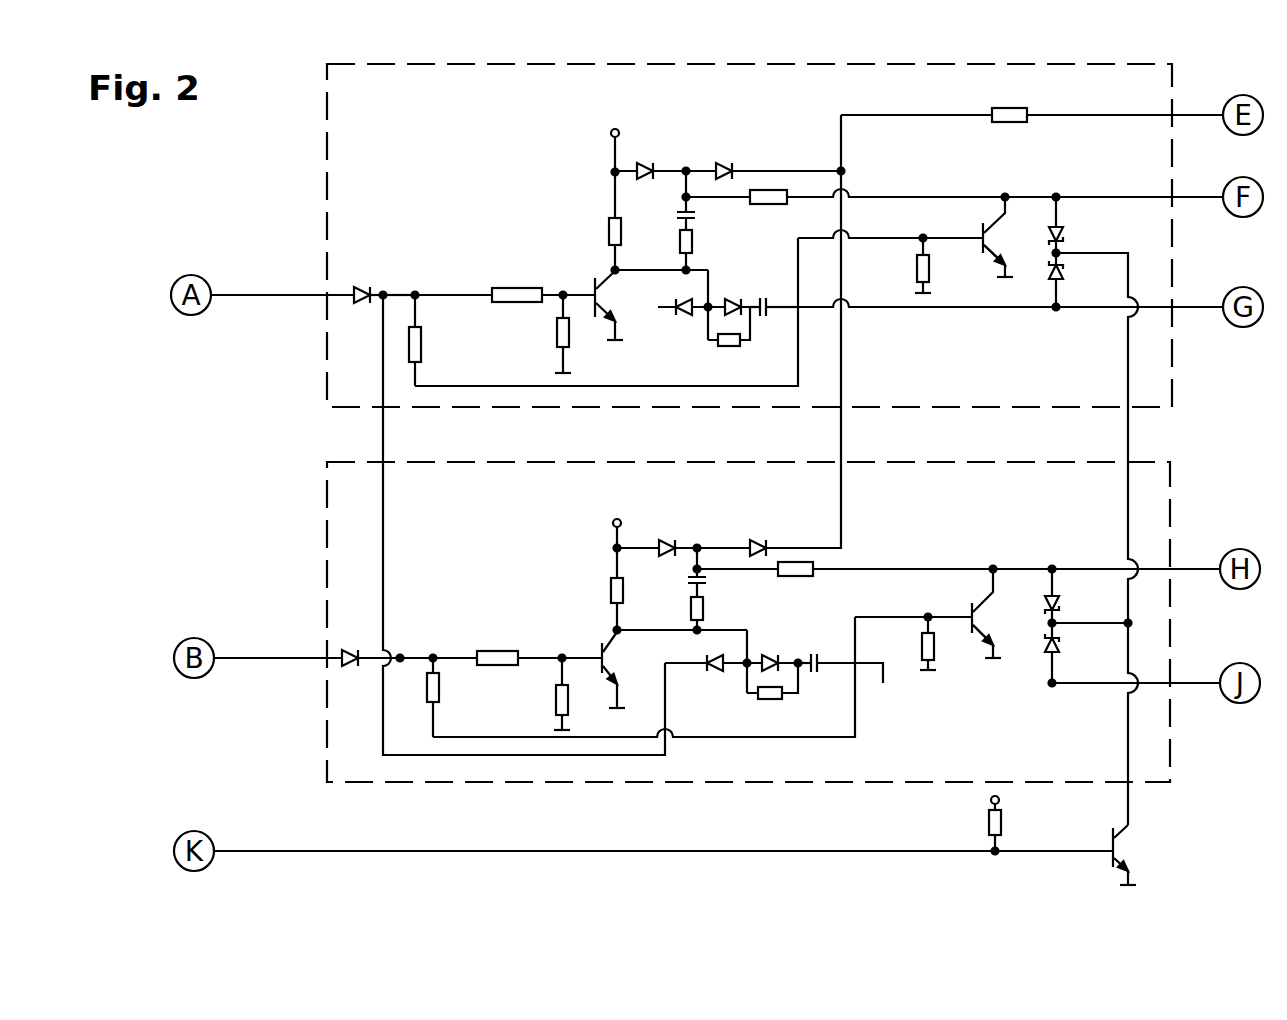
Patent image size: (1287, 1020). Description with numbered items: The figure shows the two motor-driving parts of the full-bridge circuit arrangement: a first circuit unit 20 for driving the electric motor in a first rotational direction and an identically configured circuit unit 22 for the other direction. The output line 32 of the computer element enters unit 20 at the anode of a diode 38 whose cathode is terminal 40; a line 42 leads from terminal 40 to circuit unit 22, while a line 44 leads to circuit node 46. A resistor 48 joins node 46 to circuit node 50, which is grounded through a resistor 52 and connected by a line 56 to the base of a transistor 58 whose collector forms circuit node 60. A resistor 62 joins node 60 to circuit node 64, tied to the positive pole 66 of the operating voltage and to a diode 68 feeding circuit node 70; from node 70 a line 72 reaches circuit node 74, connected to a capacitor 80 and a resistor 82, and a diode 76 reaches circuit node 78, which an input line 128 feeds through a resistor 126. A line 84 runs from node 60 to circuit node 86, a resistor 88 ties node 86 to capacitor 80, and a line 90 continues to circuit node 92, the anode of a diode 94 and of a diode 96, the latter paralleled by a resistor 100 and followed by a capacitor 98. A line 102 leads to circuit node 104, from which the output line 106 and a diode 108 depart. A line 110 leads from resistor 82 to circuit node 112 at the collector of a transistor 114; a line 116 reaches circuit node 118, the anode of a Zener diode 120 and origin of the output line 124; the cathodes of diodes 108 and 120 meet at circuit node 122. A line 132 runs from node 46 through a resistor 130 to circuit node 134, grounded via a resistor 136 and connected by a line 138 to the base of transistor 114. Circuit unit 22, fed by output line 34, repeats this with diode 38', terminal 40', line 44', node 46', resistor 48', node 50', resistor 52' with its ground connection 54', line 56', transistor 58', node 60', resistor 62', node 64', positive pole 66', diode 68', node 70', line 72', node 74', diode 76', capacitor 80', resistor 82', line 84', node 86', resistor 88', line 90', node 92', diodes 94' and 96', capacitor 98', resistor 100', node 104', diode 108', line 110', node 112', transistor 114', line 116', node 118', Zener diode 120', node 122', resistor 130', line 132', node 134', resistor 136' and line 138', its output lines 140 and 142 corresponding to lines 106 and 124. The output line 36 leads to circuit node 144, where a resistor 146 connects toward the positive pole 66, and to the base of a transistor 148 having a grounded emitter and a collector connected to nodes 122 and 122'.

The first circuit unit 20 is at (1172, 77).
The circuit unit 22 is at (1170, 473).
The output line 32 is at (248, 293).
The output line 34 is at (260, 655).
The output line 36 is at (288, 848).
The diode 38 is at (365, 265).
The terminal 40 is at (367, 325).
The line 42 is at (385, 432).
The line 44 is at (402, 265).
The circuit node 46 is at (438, 261).
The resistor 48 is at (453, 238).
The circuit node 50 is at (526, 265).
The resistor 52 is at (582, 339).
The ground connection 54' is at (538, 718).
The line 56 is at (568, 270).
The transistor 58 is at (621, 305).
The circuit node 60 is at (593, 237).
The resistor 62 is at (589, 203).
The circuit node 64 is at (588, 147).
The positive pole of the operating voltage 66 is at (788, 453).
The diode 68 is at (650, 143).
The circuit node 70 is at (697, 141).
The first line 72 is at (676, 134).
The circuit node 74 is at (663, 201).
The diode 76 is at (763, 144).
The circuit node 78 is at (842, 170).
The capacitor 80 is at (722, 221).
The resistor 82 is at (756, 217).
The line 84 is at (661, 251).
The circuit node 86 is at (675, 286).
The resistor 88 is at (702, 248).
The line 90 is at (743, 290).
The circuit node 92 is at (729, 288).
The diode 94 is at (683, 337).
The diode 96 is at (792, 287).
The capacitor 98 is at (782, 332).
The resistor 100 is at (739, 347).
The line 102 is at (890, 310).
The circuit node 104 is at (1083, 331).
The output line 106 is at (1205, 313).
The diode 108 is at (1037, 305).
The line 110 is at (896, 170).
The circuit node 112 is at (983, 172).
The transistor 114 is at (981, 273).
The line 116 is at (1031, 170).
The circuit node 118 is at (1089, 172).
The Zener diode 120 is at (1084, 223).
The circuit node 122 is at (1109, 520).
The output line 124 is at (1200, 203).
The resistor 126 is at (1028, 110).
The input line 128 is at (930, 115).
The resistor 130 is at (443, 340).
The line 132 is at (606, 312).
The circuit node 134 is at (899, 221).
The resistor 136 is at (894, 266).
The line 138 is at (974, 237).
The output line 140 is at (1195, 688).
The output line 142 is at (1200, 575).
The circuit node 144 is at (993, 853).
The resistor 146 is at (1003, 818).
The transistor 148 is at (1130, 842).
The diode 38' is at (368, 628).
The terminal 40' is at (420, 630).
The line 44' is at (412, 686).
The circuit node 46' is at (432, 605).
The resistor 48' is at (463, 596).
The circuit node 50' is at (518, 618).
The resistor 52' is at (582, 698).
The line 56' is at (554, 598).
The transistor 58' is at (630, 670).
The circuit node 60' is at (573, 610).
The resistor 62' is at (596, 578).
The circuit node 64' is at (581, 530).
The positive pole of the operating voltage 66' is at (604, 506).
The diode 68' is at (657, 521).
The circuit node 70' is at (715, 506).
The first line 72' is at (725, 534).
The circuit node 74' is at (674, 578).
The diode 76' is at (769, 524).
The capacitor 80' is at (733, 581).
The resistor 82' is at (766, 591).
The line 84' is at (656, 610).
The circuit node 86' is at (673, 612).
The resistor 88' is at (714, 609).
The line 90' is at (766, 647).
The circuit node 92' is at (755, 685).
The diode 94' is at (706, 693).
The diode 96' is at (818, 645).
The capacitor 98' is at (834, 691).
The resistor 100' is at (779, 702).
The circuit node 104' is at (1087, 707).
The diode 108' is at (1085, 653).
The line 110' is at (903, 536).
The circuit node 112' is at (961, 538).
The transistor 114' is at (1013, 585).
The line 116' is at (1041, 526).
The circuit node 118' is at (1090, 549).
The Zener diode 120' is at (1084, 594).
The circuit node 122' is at (1061, 674).
The resistor 130' is at (465, 697).
The line 132' is at (680, 681).
The circuit node 134' is at (886, 596).
The resistor 136' is at (901, 643).
The line 138' is at (954, 613).